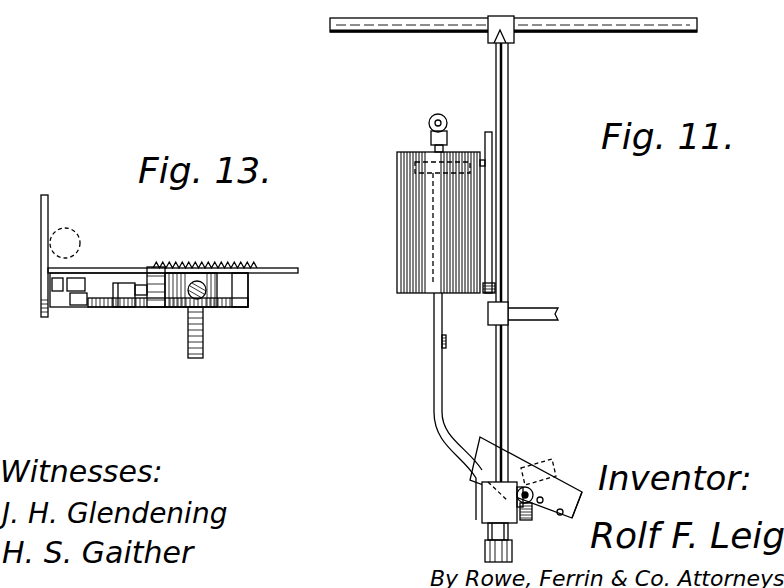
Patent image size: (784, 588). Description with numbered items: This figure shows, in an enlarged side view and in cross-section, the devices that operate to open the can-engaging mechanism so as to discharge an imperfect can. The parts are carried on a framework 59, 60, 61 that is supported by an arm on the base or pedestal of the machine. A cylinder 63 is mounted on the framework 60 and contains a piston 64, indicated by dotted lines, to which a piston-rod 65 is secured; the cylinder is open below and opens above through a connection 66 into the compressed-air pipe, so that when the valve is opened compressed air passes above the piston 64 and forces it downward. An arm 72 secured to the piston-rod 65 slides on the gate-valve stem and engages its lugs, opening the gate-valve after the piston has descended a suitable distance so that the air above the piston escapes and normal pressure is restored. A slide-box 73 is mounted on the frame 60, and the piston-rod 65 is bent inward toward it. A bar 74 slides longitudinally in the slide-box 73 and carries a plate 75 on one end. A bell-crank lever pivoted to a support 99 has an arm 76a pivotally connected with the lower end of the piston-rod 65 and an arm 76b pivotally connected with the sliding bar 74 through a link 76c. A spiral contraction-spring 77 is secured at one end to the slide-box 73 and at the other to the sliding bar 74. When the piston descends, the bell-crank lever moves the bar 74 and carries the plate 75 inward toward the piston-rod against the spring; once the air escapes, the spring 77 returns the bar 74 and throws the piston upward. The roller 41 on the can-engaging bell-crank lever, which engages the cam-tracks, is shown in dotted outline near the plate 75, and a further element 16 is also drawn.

In FIG. 11, the framework 59 is at (568, 32).
In FIG. 11, the framework 60 is at (509, 105).
In FIG. 13, the framework 60 is at (205, 296).
In FIG. 11, the framework 61 is at (527, 315).
In FIG. 11, the cylinder 63 is at (410, 205).
In FIG. 11, the piston 64 is at (415, 165).
In FIG. 11, the piston-rod 65 is at (434, 397).
In FIG. 13, the piston-rod 65 is at (203, 355).
In FIG. 11, the connection 66 is at (449, 130).
In FIG. 11, the arm 72 is at (446, 340).
In FIG. 11, the slide-box 73 is at (484, 496).
In FIG. 13, the slide-box 73 is at (240, 297).
In FIG. 11, the bar 74 is at (519, 516).
In FIG. 13, the bar 74 is at (113, 267).
In FIG. 11, the plate 75 is at (512, 463).
In FIG. 13, the plate 75 is at (50, 210).
In FIG. 11, the roller 41 is at (550, 464).
In FIG. 13, the roller 41 is at (80, 235).
In FIG. 11, the spiral contraction-spring 77 is at (572, 508).
In FIG. 13, the spiral contraction-spring 77 is at (190, 260).
In FIG. 11, the arm of bell-crank lever 76a is at (488, 540).
In FIG. 13, the arm of bell-crank lever 76a is at (140, 298).
In FIG. 13, the arm of bell-crank lever 76b is at (120, 307).
In FIG. 13, the link 76c is at (70, 293).
In FIG. 13, the frame 16 is at (125, 303).
In FIG. 11, the support 99 is at (512, 550).
In FIG. 13, the support 99 is at (150, 290).